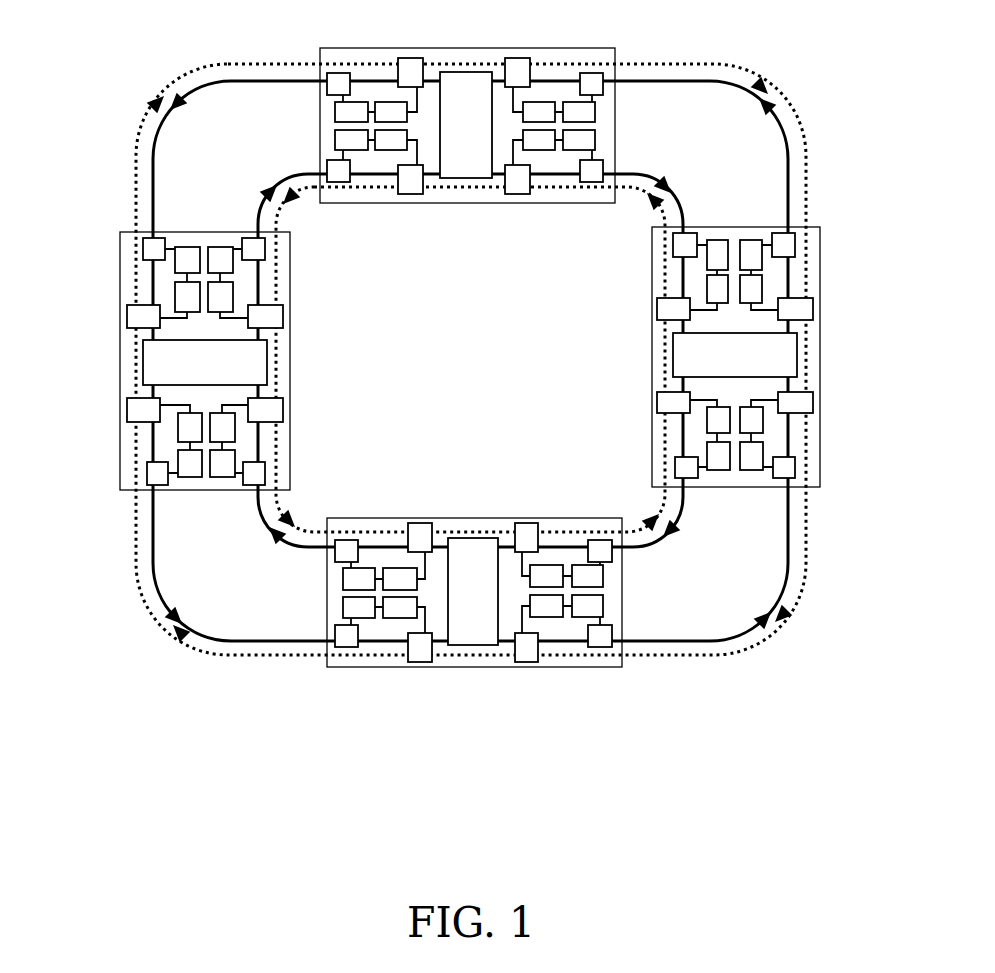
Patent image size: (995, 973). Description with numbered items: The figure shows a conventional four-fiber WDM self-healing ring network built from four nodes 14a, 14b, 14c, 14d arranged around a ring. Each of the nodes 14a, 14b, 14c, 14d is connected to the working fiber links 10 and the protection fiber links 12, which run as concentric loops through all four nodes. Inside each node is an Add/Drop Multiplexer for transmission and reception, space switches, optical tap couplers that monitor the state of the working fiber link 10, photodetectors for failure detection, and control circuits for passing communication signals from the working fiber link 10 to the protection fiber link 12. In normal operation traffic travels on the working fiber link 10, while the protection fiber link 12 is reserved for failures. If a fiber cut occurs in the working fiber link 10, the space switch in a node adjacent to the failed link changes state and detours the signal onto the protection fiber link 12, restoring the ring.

The working fiber link 10 is at (262, 513).
The protection fiber link 12 is at (667, 502).
The node 14a is at (621, 49).
The node 14b is at (120, 357).
The node 14c is at (624, 667).
The node 14d is at (822, 488).